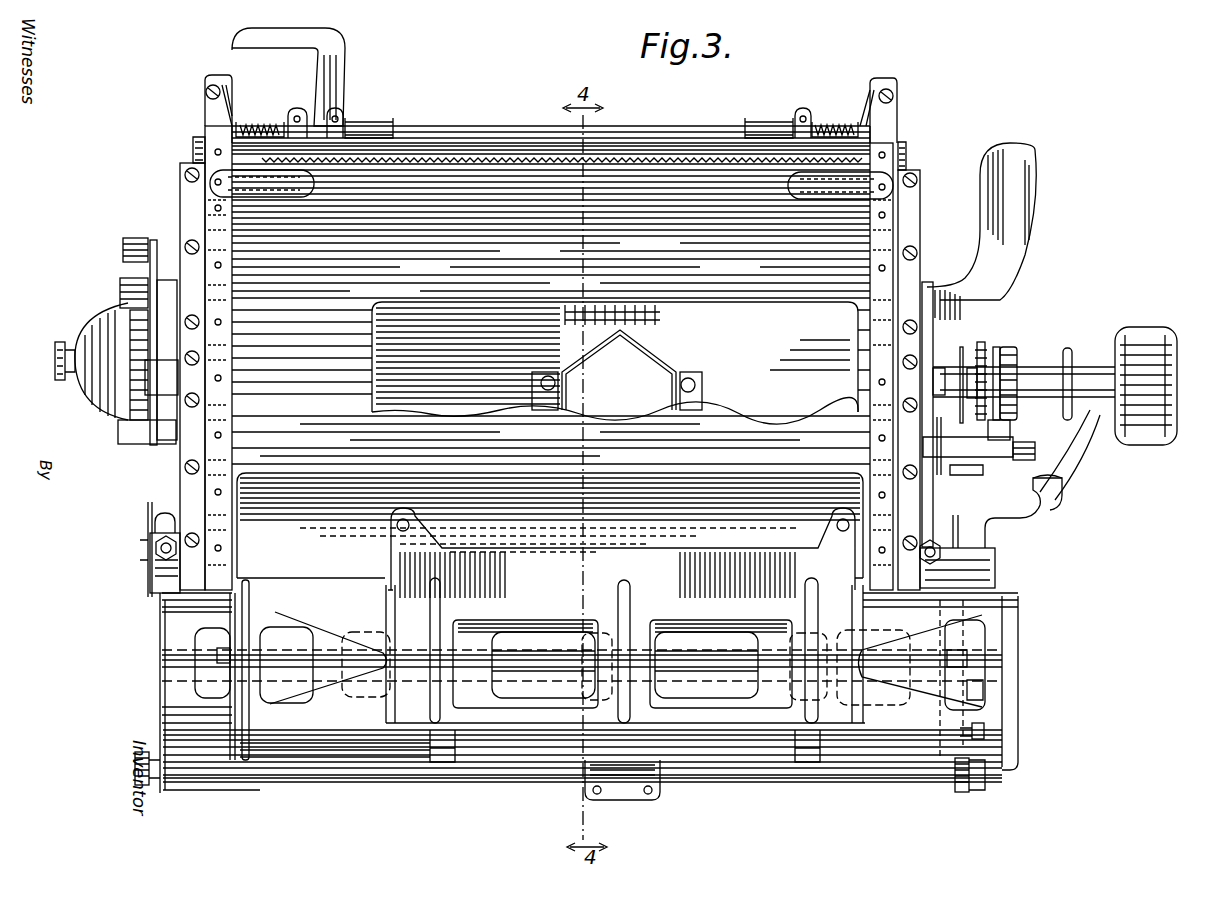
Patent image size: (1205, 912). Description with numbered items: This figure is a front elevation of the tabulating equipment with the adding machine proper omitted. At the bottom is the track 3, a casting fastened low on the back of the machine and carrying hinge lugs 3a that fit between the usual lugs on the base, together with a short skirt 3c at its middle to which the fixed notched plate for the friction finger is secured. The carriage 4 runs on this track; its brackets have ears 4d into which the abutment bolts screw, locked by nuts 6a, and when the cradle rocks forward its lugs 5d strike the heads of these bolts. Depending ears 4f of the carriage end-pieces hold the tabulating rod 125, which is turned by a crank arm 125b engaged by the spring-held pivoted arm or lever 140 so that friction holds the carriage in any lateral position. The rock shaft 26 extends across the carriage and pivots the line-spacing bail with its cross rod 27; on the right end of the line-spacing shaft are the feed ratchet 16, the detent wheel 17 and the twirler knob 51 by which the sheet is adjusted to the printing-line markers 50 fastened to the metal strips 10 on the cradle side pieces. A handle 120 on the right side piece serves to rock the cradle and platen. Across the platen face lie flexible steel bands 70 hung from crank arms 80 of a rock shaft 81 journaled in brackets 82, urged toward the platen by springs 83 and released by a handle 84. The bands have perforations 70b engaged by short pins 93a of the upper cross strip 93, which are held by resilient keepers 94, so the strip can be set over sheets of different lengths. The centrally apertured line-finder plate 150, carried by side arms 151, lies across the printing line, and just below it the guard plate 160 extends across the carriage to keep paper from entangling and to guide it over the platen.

The track 3 is at (590, 634).
The hinge lugs 3a is at (435, 775).
The short skirt 3c is at (640, 795).
The carriage 4 is at (215, 745).
The ears 4d is at (148, 530).
The depending ears 4f is at (160, 792).
The lugs 5d is at (165, 520).
The nuts 6a is at (148, 560).
The metal strips 10 is at (915, 497).
The feed ratchet 16 is at (983, 345).
The detent wheel 17 is at (1000, 342).
The rock shaft 26 is at (672, 668).
The cross rod 27 is at (730, 655).
The markers 50 is at (208, 393).
The twirler knob 51 is at (1147, 330).
The flexible steel bands 70 is at (232, 360).
The perforations 70b is at (222, 322).
The crank arms 80 is at (228, 97).
The rock shaft 81 is at (668, 128).
The brackets 82 is at (355, 118).
The springs 83 is at (270, 115).
The handle 84 is at (350, 60).
The upper cross strip 93 is at (532, 160).
The short pins 93a is at (207, 182).
The keepers 94 is at (290, 195).
The handle 120 is at (1010, 183).
The tabulating rod 125 is at (885, 772).
The crank arm 125b is at (1010, 742).
The pivoted arm or lever 140 is at (965, 702).
The line-finder plate 150 is at (742, 330).
The side arms 151 is at (706, 388).
The guard plate 160 is at (550, 525).